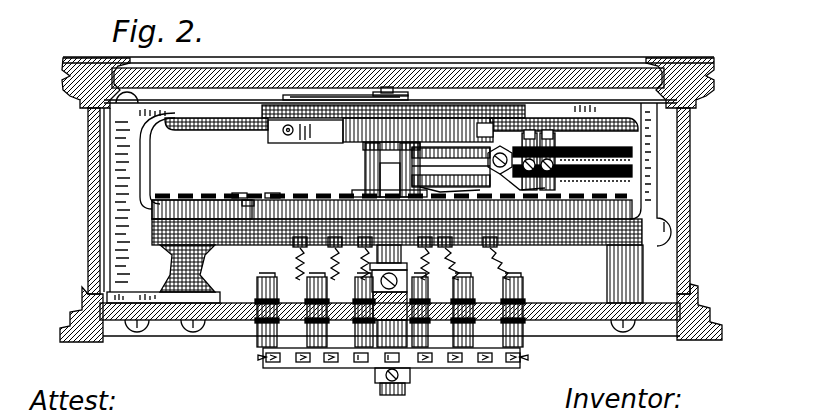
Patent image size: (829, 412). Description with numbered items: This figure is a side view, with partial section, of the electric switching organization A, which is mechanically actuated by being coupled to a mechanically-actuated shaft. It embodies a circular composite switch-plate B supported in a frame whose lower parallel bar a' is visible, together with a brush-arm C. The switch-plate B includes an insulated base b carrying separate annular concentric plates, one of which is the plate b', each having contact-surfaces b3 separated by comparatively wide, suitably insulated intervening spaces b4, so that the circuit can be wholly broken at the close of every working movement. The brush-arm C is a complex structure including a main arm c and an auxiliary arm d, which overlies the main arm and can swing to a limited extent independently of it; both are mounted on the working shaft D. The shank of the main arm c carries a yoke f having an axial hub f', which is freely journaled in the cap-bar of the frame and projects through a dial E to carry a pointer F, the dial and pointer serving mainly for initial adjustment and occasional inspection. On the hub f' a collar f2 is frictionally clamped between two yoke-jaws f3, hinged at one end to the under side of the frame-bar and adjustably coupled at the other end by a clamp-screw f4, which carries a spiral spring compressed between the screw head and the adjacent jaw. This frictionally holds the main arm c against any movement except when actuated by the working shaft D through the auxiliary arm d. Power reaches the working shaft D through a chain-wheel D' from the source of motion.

The electric switching organization A is at (378, 199).
The switch-plate B is at (397, 203).
The brush-arm C is at (478, 169).
The working shaft D is at (390, 328).
The chain-wheel D' is at (391, 332).
The dial E is at (476, 100).
The pointer F is at (339, 95).
The lower frame bar a' is at (204, 201).
The insulated base b is at (203, 212).
The annular concentric plate b' is at (256, 186).
The contact-surfaces b3 is at (274, 195).
The intervening spaces b4 is at (239, 194).
The main arm c is at (630, 173).
The auxiliary arm d is at (625, 151).
The yoke f is at (389, 170).
The hub f' is at (390, 60).
The collar f2 is at (366, 144).
The yoke-jaws f3 is at (305, 131).
The clamp-screw f4 is at (283, 130).